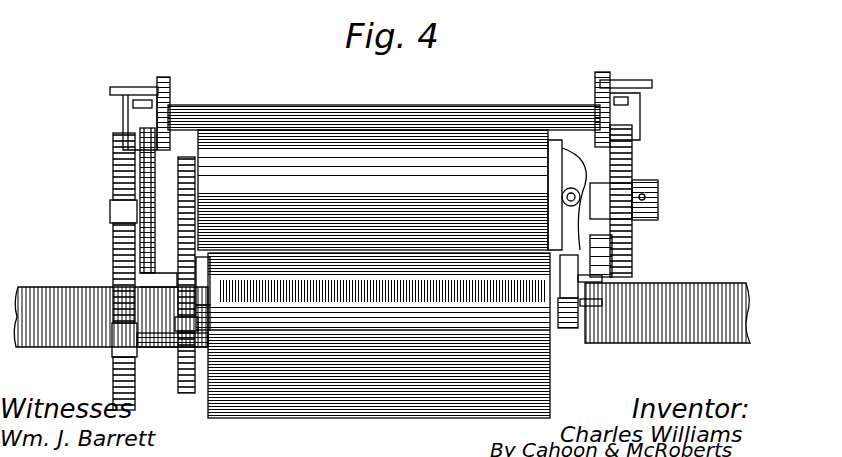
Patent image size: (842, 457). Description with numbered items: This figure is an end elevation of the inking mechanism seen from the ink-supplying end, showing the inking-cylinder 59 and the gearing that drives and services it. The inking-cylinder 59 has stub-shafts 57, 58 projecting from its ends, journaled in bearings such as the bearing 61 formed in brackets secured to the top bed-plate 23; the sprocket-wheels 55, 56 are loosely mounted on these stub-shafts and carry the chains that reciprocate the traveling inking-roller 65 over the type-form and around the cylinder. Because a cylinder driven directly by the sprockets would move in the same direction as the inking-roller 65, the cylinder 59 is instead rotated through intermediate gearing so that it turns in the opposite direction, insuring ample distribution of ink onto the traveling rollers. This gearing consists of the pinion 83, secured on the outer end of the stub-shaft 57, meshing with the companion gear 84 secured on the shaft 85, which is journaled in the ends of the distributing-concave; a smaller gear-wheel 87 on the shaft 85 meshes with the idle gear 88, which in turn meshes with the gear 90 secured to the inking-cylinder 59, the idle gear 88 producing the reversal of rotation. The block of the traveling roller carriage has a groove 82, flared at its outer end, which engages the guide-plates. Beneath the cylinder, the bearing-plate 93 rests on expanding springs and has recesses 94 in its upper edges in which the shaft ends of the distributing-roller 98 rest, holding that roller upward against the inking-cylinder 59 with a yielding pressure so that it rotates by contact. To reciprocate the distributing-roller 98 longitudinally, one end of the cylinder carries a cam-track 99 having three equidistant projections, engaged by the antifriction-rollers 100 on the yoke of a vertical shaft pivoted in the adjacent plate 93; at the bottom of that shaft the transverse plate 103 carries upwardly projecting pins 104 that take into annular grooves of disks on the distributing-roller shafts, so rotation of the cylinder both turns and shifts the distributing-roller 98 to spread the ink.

The top bed-plate 23 is at (740, 289).
The sprocket-wheel 55 is at (130, 165).
The sprocket-wheel 56 is at (658, 208).
The stub-shaft 57 is at (148, 192).
The stub-shaft 58 is at (622, 178).
The inking-cylinder 59 is at (373, 190).
The bearing 61 is at (652, 192).
The inking-roller 65 is at (296, 107).
The groove 82 is at (158, 78).
The pinion 83 is at (120, 228).
The companion gear 84 is at (126, 418).
The shaft 85 is at (160, 346).
The smaller gear-wheel 87 is at (181, 386).
The idle gear 88 is at (182, 278).
The gear 90 is at (196, 191).
The bearing-plate 93 is at (566, 288).
The recess 94 is at (605, 278).
The distributing-roller 98 is at (381, 265).
The cam-track 99 is at (548, 188).
The antifriction-roller 100 is at (618, 230).
The transverse plate 103 is at (588, 310).
The pin 104 is at (604, 299).